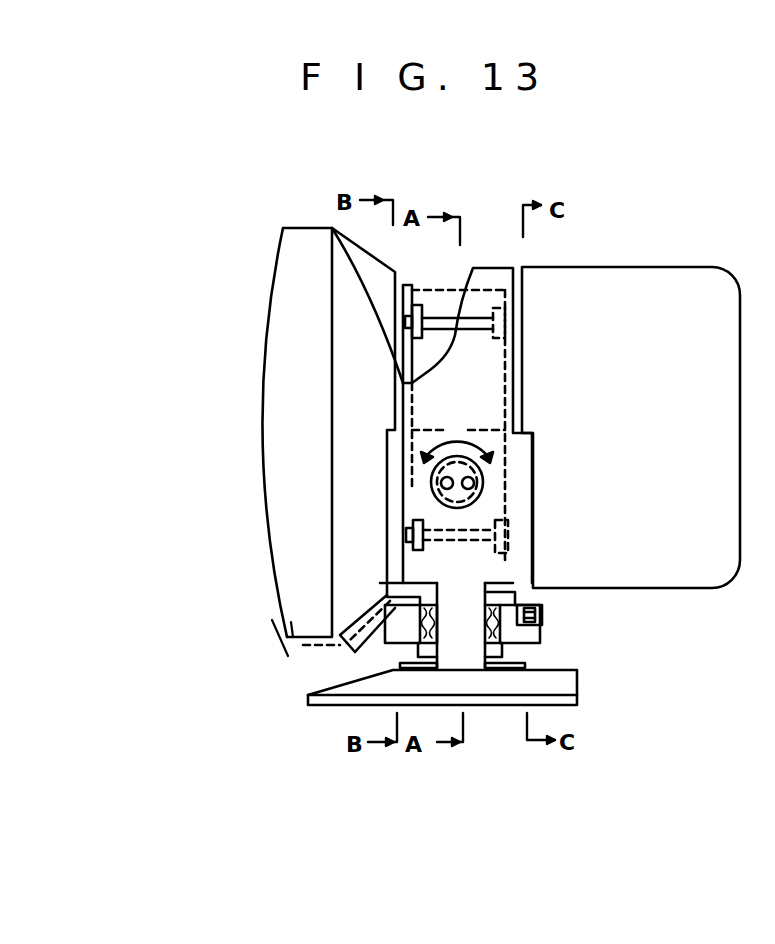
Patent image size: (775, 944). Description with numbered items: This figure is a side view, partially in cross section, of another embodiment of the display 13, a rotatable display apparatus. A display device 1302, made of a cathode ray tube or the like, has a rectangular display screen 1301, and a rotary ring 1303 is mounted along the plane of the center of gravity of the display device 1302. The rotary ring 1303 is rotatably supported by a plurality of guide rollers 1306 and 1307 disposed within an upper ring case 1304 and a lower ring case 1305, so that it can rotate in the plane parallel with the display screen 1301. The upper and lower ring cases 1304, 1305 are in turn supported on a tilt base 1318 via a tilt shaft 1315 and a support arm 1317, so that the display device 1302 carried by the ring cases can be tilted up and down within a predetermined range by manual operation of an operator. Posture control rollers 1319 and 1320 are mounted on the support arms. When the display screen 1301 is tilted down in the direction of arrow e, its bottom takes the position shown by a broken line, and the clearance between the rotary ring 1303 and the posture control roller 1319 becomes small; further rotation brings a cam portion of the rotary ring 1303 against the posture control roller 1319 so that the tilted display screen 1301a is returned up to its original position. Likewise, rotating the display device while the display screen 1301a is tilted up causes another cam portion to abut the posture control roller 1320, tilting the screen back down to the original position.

The display 13 is at (733, 188).
The display screen 1301 is at (263, 323).
The display screen 1301a is at (287, 263).
The display device 1302 is at (632, 276).
The rotary ring 1303 is at (423, 361).
The upper ring case 1304 is at (488, 282).
The lower ring case 1305 is at (507, 550).
The guide roller 1306 is at (405, 322).
The guide roller 1307 is at (406, 543).
The tilt shaft 1315 is at (488, 568).
The support arm 1317 is at (470, 658).
The tilt base 1318 is at (318, 702).
The posture control roller 1319 is at (344, 641).
The posture control roller 1320 is at (543, 618).